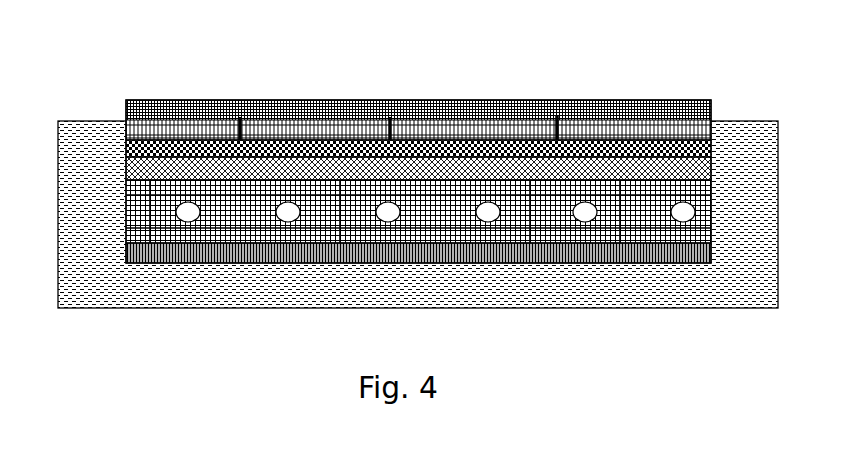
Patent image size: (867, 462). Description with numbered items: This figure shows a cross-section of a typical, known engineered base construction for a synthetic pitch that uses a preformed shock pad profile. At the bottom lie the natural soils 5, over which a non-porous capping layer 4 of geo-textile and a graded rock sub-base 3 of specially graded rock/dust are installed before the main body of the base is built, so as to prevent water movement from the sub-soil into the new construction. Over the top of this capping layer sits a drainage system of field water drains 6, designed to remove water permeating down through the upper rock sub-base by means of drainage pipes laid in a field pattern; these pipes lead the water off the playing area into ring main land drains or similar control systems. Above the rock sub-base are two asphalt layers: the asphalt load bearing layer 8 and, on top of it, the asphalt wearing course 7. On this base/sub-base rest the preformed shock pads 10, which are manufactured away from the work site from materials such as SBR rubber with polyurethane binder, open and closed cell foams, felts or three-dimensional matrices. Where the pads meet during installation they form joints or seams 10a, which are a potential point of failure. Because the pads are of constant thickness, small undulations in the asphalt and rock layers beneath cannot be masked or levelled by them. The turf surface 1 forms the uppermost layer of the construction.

The turf surface 1 is at (133, 107).
The graded rock sub-base 3 is at (133, 206).
The non-porous capping layer 4 is at (133, 257).
The natural soils 5 is at (270, 306).
The field water drains 6 is at (190, 211).
The asphalt wearing course 7 is at (133, 148).
The asphalt load bearing layer 8 is at (133, 165).
The preformed shock pads 10 is at (193, 128).
The joints or seams 10a is at (241, 118).